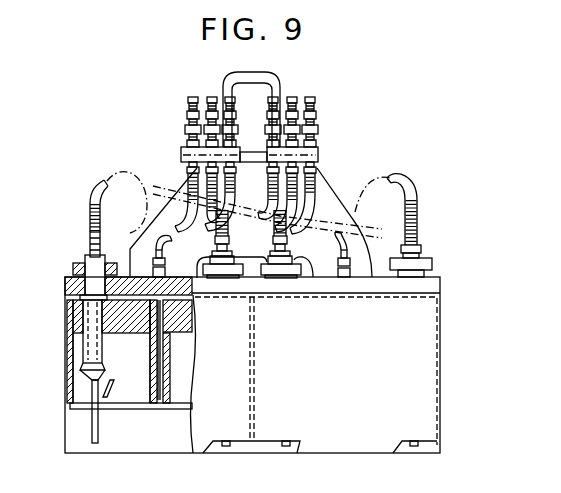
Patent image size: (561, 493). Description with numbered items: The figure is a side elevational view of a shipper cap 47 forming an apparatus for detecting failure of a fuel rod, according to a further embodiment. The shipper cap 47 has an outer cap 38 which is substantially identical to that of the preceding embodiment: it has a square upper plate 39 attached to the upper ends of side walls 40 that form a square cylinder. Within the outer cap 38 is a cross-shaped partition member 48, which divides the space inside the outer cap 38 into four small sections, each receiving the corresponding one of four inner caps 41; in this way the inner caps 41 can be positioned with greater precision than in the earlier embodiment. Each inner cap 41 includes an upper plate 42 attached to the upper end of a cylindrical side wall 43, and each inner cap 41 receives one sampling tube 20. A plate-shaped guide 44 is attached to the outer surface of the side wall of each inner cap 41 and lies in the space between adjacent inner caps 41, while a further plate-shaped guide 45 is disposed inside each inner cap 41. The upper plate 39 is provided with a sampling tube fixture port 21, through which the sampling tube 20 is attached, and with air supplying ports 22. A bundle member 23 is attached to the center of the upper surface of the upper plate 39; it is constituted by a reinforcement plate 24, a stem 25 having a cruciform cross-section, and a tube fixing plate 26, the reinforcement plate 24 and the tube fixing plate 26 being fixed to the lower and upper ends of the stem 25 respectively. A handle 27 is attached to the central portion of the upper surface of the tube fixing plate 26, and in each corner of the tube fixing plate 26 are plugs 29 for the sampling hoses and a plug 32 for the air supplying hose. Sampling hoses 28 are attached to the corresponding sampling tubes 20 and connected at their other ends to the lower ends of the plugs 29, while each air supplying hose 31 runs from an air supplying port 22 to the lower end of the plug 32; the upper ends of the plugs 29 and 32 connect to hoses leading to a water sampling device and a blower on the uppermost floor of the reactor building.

The sampling tube 20 is at (93, 420).
The sampling tube fixture port 21 is at (77, 266).
The air supplying port 22 is at (160, 305).
The bundle member 23 is at (321, 263).
The reinforcement plate 24 is at (368, 273).
The stem 25 is at (333, 190).
The tube fixing plate 26 is at (318, 150).
The handle 27 is at (229, 80).
The sampling hose 28 is at (100, 184).
The plug for sampling hoses 29 is at (185, 141).
The air supplying hose 31 is at (145, 238).
The plug for the air supplying hose 32 is at (236, 128).
The outer cap 38 is at (445, 386).
The upper plate 39 is at (65, 287).
The side walls 40 is at (65, 379).
The inner cap 41 is at (133, 408).
The upper plate 42 is at (132, 327).
The cylindrical side wall 43 is at (163, 387).
The plate-shaped guide 44 is at (158, 350).
The plate-shaped guide 45 is at (110, 391).
The shipper cap 47 is at (402, 164).
The cross-shaped partition member 48 is at (253, 395).